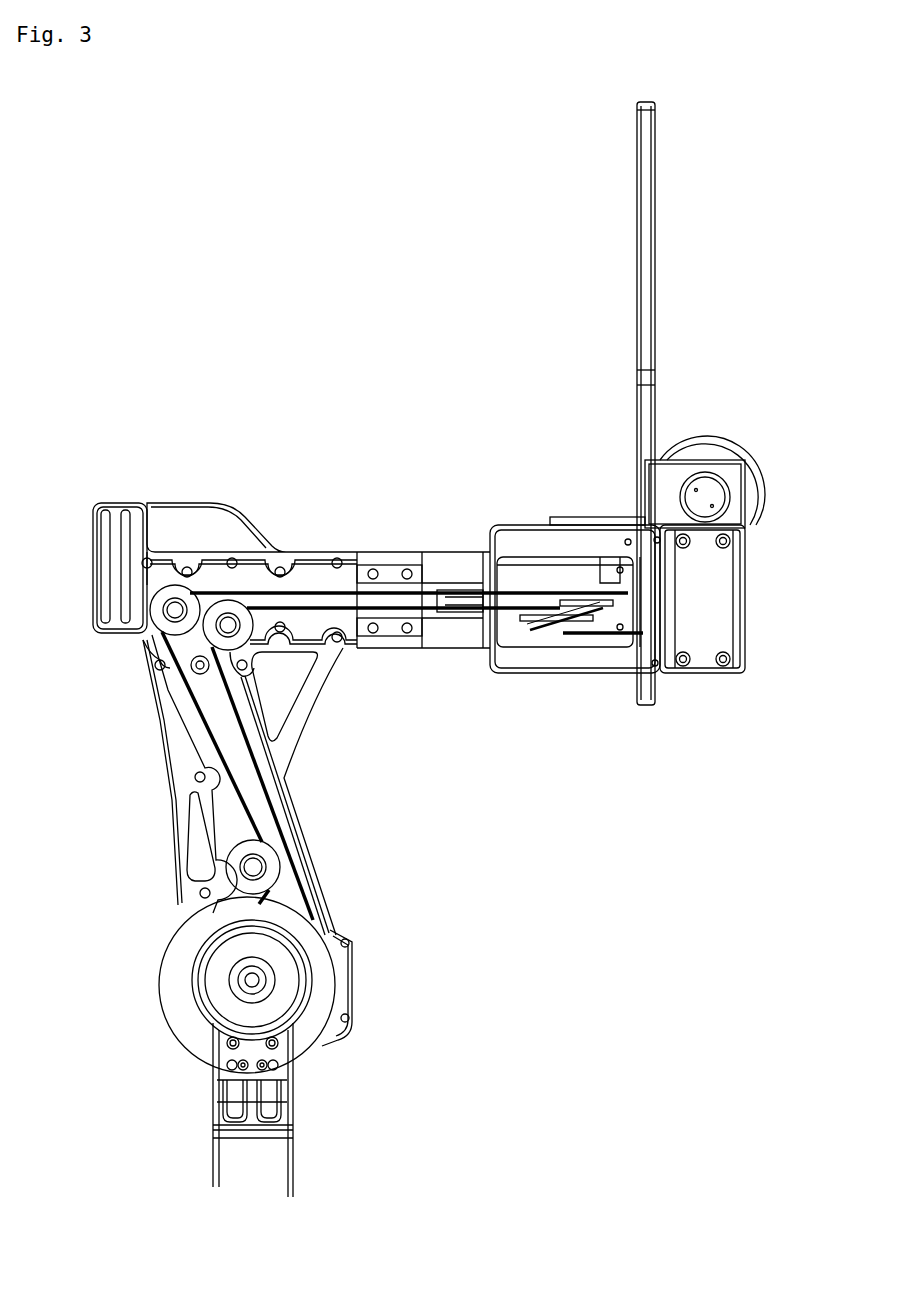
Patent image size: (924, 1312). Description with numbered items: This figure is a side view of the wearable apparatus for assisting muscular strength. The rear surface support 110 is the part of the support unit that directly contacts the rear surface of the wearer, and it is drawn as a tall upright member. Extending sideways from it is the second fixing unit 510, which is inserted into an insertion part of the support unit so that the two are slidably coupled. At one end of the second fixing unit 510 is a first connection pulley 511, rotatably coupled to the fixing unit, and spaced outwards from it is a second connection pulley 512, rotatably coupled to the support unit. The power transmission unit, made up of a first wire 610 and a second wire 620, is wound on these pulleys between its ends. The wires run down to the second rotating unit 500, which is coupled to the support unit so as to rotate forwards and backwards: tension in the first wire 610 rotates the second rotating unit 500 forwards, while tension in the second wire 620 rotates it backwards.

The rear surface support 110 is at (656, 292).
The second fixing unit 510 is at (183, 517).
The first connection pulley 511 is at (583, 648).
The second connection pulley 512 is at (545, 645).
The first wire 610 is at (194, 707).
The second wire 620 is at (278, 804).
The second rotating unit 500 is at (297, 1105).